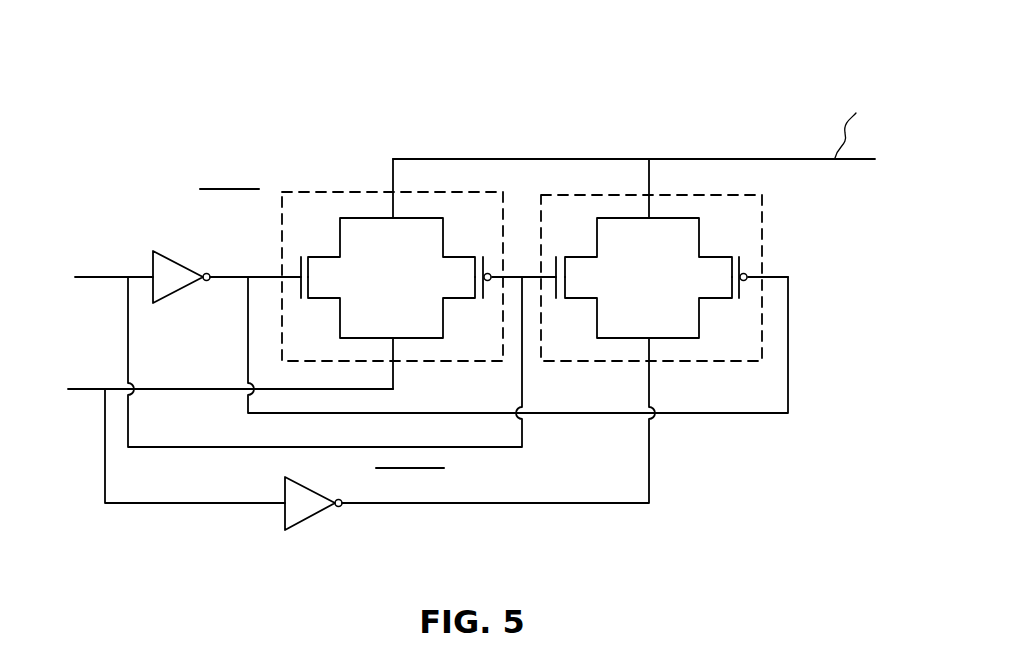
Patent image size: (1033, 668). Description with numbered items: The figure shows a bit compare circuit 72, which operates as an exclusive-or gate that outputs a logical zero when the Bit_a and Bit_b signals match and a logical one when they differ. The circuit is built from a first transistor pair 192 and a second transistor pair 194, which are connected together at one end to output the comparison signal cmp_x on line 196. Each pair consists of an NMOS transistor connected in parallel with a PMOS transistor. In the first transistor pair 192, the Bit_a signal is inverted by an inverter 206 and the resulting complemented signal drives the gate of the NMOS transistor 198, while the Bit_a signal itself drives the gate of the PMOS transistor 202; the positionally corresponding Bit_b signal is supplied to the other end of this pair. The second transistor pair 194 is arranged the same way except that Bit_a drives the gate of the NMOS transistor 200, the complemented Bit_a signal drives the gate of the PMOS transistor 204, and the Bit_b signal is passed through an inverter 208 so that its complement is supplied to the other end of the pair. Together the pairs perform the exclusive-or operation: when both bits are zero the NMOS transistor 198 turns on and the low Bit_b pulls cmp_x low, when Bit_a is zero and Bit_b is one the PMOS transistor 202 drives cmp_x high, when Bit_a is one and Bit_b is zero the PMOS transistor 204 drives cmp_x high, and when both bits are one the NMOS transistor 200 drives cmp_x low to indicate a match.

The bit compare circuit 72 is at (245, 100).
The first transistor pair 192 is at (505, 198).
The second transistor pair 194 is at (765, 222).
The line 196 is at (773, 158).
The NMOS transistor 198 is at (338, 276).
The NMOS transistor 200 is at (596, 276).
The PMOS transistor 202 is at (444, 281).
The PMOS transistor 204 is at (702, 290).
The inverter 206 is at (195, 245).
The inverter 208 is at (320, 465).